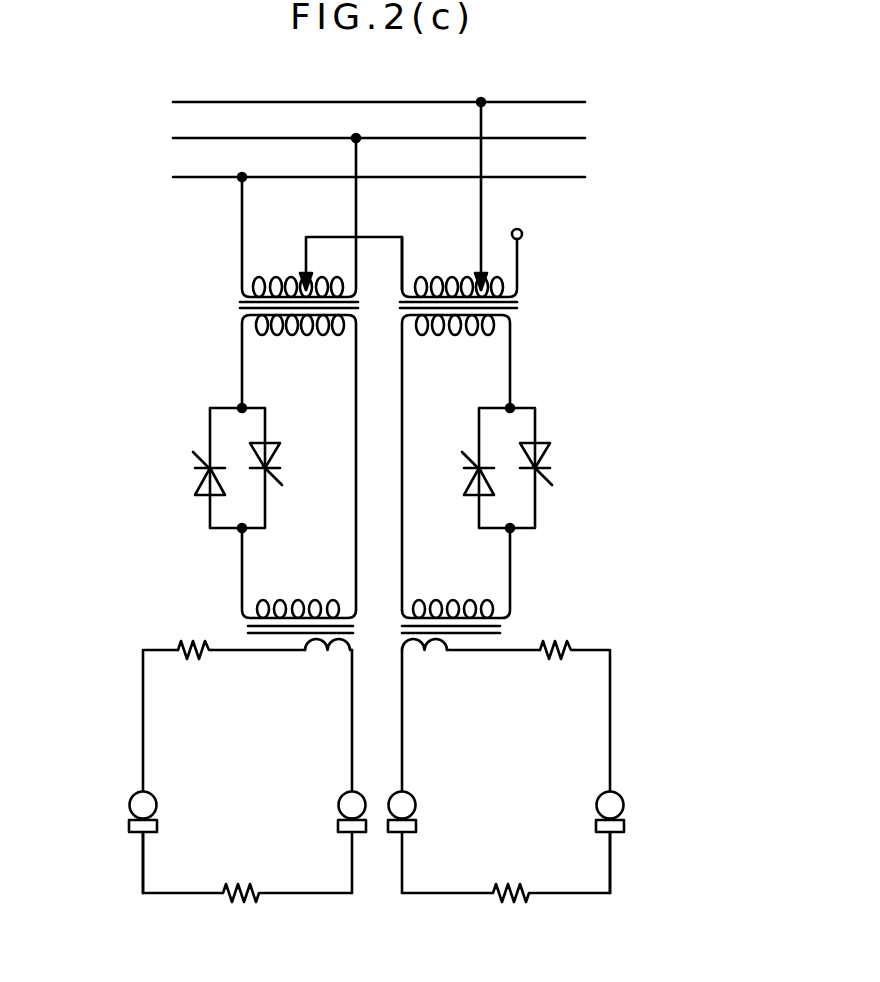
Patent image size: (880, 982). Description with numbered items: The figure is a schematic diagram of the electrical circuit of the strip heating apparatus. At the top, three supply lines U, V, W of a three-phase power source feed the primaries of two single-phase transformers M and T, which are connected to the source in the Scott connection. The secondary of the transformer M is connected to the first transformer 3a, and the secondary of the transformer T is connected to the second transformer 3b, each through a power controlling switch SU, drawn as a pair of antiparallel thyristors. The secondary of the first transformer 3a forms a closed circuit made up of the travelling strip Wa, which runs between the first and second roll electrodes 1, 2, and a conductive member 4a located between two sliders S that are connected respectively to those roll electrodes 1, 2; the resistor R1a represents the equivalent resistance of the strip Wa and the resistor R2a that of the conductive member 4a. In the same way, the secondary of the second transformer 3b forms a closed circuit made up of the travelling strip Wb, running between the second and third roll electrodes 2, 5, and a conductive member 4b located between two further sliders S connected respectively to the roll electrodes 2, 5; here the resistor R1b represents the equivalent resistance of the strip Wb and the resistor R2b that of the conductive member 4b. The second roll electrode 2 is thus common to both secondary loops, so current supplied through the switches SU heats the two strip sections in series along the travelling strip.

The U-phase supply line U is at (366, 101).
The V-phase supply line V is at (365, 136).
The W-phase supply line W is at (363, 175).
The single-phase transformer M is at (217, 298).
The single-phase transformer T is at (537, 294).
The power controlling switch SU is at (185, 433).
The first transformer 3a is at (226, 614).
The second transformer 3b is at (516, 607).
The equivalent resistance of the strip Wa R1a is at (189, 628).
The equivalent resistance of the strip Wb R1b is at (566, 628).
The equivalent resistance of the conductive member 4a R2a is at (247, 915).
The equivalent resistance of the conductive member 4b R2b is at (506, 915).
The travelling strip Wa is at (143, 700).
The travelling strip Wb is at (610, 748).
The first roll electrode 1 is at (153, 800).
The second roll electrode 2 is at (343, 800).
The third roll electrode 5 is at (598, 800).
The slider S is at (157, 826).
The conductive member 4a is at (143, 857).
The conductive member 4b is at (610, 863).